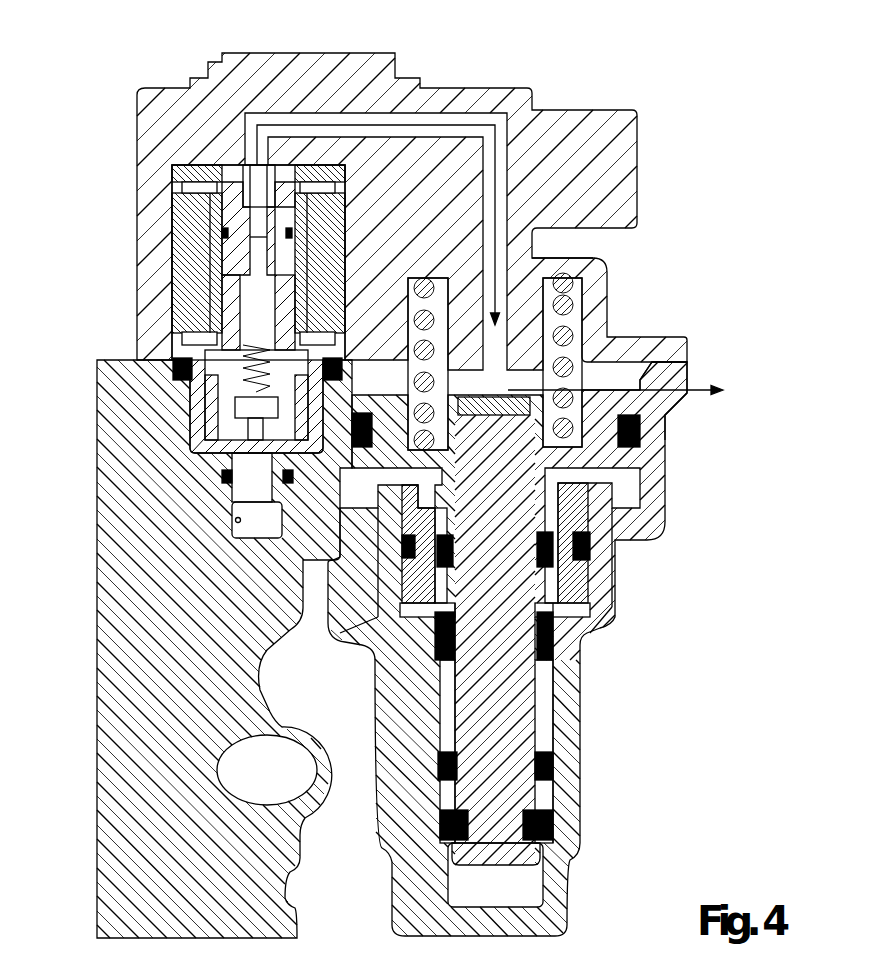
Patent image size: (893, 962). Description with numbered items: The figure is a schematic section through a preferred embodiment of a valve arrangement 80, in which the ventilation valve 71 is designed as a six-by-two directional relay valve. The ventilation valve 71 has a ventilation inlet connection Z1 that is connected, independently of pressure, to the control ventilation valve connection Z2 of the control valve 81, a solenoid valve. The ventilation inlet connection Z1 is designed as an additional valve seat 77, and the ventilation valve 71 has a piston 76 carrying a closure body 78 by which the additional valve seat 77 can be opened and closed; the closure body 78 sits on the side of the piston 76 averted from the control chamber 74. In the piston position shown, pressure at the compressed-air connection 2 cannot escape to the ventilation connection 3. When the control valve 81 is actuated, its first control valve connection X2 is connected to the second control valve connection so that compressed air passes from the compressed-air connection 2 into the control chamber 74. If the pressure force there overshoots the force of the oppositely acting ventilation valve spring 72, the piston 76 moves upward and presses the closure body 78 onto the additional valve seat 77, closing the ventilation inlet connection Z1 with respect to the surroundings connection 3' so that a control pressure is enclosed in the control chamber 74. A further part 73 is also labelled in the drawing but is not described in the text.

The compressed-air connection 2 is at (230, 524).
The valve arrangement 80 is at (160, 68).
The control ventilation valve connection Z2 is at (338, 108).
The control valve 81 is at (232, 256).
The first control valve connection X2 is at (218, 518).
The ventilation valve 71 is at (645, 760).
The control chamber 74 is at (366, 492).
The piston 76 is at (505, 598).
The ventilation connection 3 is at (530, 878).
The closure body 78 is at (505, 416).
The additional valve seat 77 is at (507, 362).
The ventilation inlet connection Z1 is at (503, 358).
The seat insert 73 is at (712, 335).
The surroundings connection 3' is at (636, 378).
The ventilation valve spring 72 is at (635, 433).